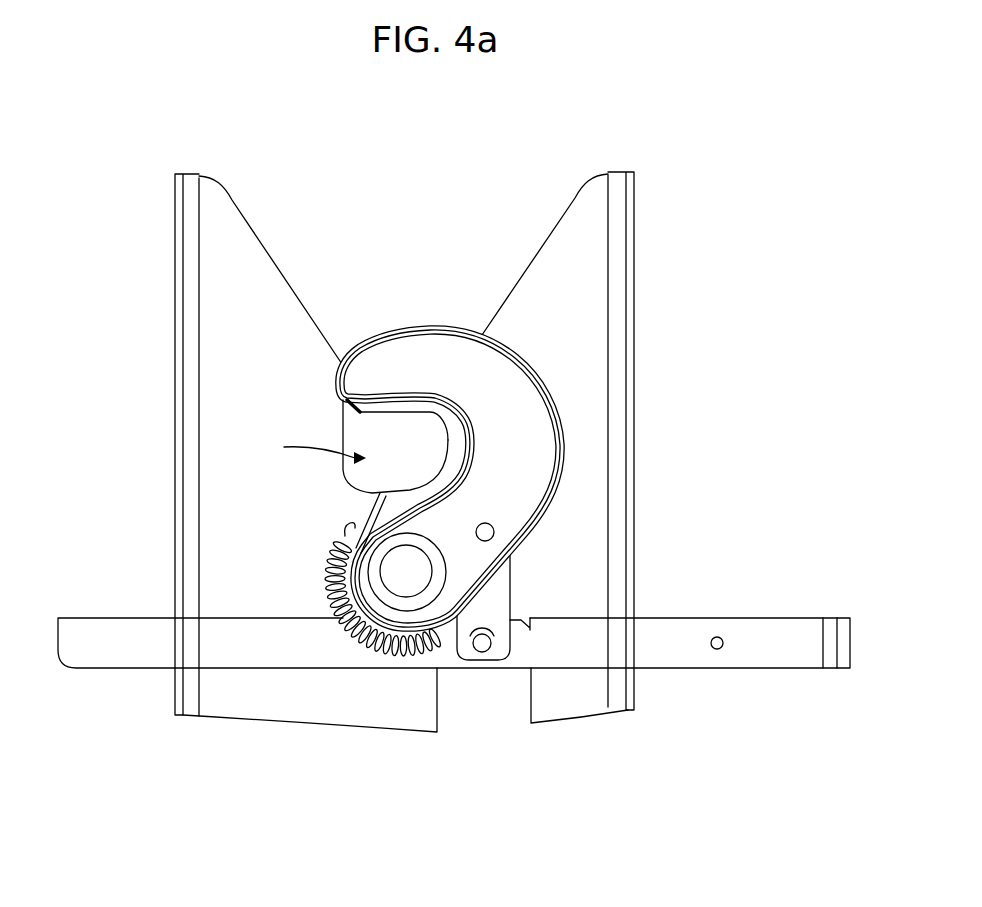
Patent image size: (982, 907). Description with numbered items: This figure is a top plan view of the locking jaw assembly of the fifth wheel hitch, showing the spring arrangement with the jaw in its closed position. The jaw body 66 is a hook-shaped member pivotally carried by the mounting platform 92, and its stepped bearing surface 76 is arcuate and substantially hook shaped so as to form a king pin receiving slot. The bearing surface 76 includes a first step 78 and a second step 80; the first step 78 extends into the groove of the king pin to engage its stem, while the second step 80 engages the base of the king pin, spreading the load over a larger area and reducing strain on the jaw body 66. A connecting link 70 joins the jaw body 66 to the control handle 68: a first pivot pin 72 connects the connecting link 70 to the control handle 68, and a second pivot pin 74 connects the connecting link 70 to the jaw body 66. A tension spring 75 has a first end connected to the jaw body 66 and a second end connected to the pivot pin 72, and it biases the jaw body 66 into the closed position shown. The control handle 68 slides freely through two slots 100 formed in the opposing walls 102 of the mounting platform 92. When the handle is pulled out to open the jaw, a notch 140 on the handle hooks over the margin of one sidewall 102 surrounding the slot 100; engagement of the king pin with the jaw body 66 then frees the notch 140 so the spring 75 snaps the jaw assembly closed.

The jaw body 66 is at (417, 358).
The control handle 68 is at (297, 650).
The connecting link 70 is at (500, 660).
The first pivot pin 72 is at (484, 653).
The second pivot pin 74 is at (495, 530).
The tension spring 75 is at (333, 551).
The stepped bearing surface 76 is at (310, 449).
The first step 78 is at (430, 422).
The second step 80 is at (458, 430).
The mounting platform 92 is at (590, 270).
The slot 100 is at (636, 632).
The wall 102 is at (632, 414).
The notch 140 is at (520, 621).